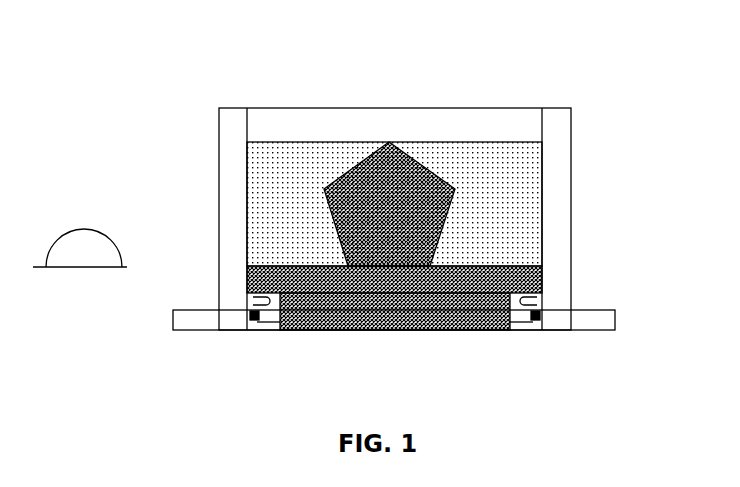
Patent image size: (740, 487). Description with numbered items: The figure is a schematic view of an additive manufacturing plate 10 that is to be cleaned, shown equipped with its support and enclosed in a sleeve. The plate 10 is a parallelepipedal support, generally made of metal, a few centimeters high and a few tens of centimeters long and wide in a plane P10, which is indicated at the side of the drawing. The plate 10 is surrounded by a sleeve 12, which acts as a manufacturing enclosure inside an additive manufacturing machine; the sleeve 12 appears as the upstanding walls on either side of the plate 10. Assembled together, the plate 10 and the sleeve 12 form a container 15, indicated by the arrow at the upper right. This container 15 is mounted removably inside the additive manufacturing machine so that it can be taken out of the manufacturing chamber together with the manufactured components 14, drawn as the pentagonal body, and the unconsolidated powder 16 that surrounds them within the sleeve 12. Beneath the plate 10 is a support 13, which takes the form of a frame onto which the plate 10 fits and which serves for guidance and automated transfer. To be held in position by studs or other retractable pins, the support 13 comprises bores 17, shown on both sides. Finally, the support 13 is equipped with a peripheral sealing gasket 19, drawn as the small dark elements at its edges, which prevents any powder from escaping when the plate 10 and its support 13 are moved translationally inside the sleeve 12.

The additive manufacturing plate 10 is at (378, 322).
The sleeve 12 is at (560, 232).
The support 13 is at (271, 316).
The manufactured components 14 is at (407, 177).
The container 15 is at (600, 73).
The unconsolidated powder 16 is at (529, 207).
The bores 17 is at (253, 301).
The peripheral sealing gasket 19 is at (255, 322).
The plane P10 is at (80, 248).